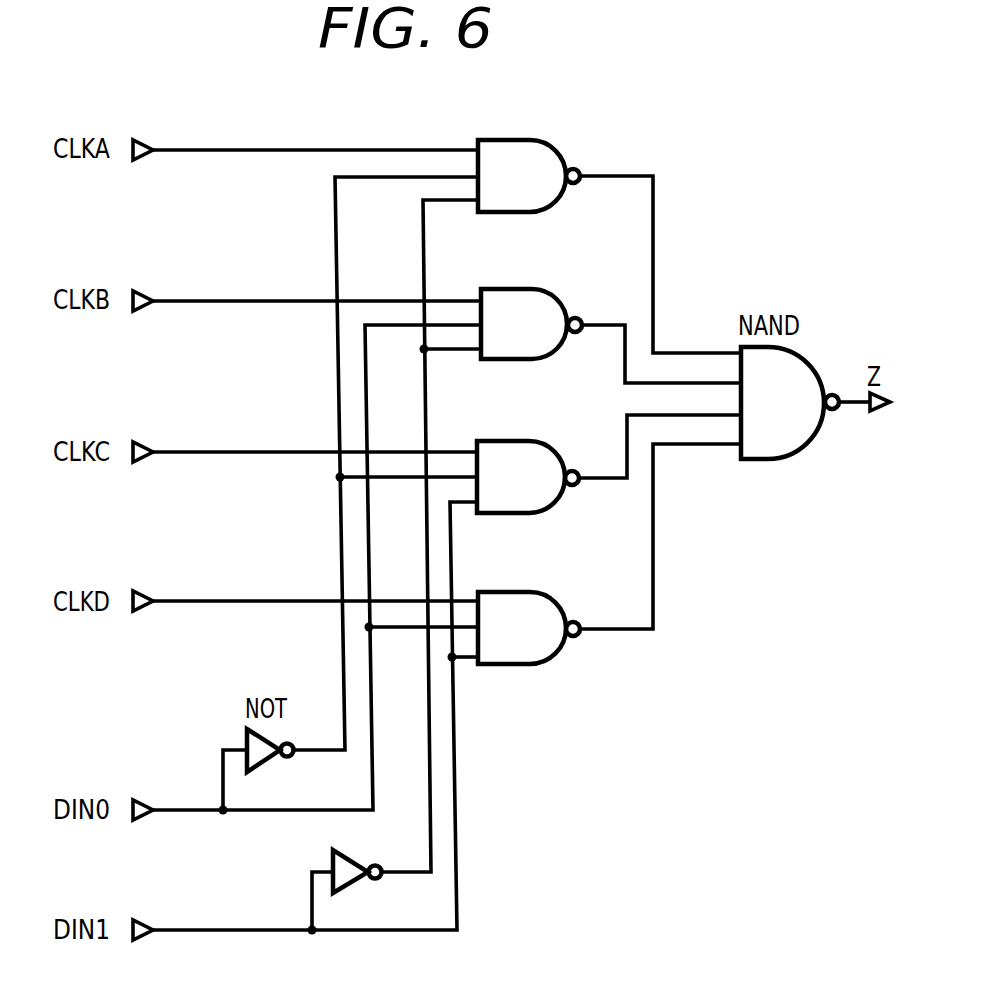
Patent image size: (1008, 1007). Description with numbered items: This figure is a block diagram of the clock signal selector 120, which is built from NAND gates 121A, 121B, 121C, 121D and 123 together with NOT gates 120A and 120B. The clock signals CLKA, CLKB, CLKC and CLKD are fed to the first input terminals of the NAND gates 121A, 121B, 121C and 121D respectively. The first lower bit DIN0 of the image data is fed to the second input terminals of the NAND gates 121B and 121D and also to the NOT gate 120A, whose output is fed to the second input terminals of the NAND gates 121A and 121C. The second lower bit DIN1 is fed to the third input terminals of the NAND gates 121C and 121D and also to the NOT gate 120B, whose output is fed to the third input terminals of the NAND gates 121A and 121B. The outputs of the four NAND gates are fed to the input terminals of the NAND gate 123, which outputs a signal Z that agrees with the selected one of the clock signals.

The selector 120 is at (724, 236).
The NOT gate 120A is at (268, 762).
The NOT gate 120B is at (350, 884).
The NAND gate 121A is at (558, 128).
The NAND gate 121B is at (546, 290).
The NAND gate 121C is at (535, 442).
The NAND gate 121D is at (536, 593).
The NAND gate 123 is at (768, 462).